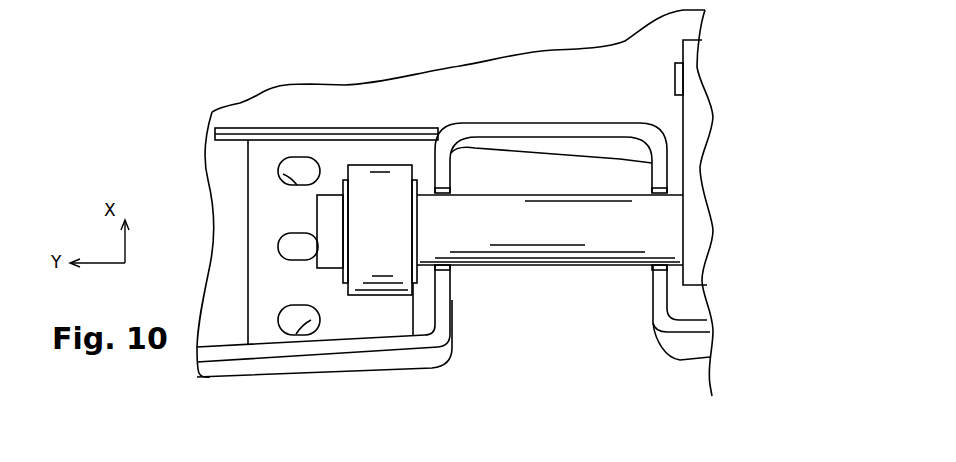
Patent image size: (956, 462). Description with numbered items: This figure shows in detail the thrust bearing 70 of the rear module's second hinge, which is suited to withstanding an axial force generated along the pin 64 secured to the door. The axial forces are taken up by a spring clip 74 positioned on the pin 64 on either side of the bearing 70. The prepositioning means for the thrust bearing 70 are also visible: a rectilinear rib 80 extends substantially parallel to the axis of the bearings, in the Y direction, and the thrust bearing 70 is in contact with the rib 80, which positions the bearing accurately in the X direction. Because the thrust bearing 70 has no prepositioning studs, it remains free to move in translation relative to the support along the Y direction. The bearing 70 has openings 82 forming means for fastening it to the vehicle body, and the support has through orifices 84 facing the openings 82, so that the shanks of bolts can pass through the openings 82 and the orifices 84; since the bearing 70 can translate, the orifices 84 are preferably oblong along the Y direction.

The pin 64 is at (515, 228).
The thrust bearing 70 is at (278, 212).
The spring clip 74 is at (343, 184).
The rectilinear rib 80 is at (235, 128).
The openings 82 is at (297, 185).
The through orifices 84 is at (297, 167).